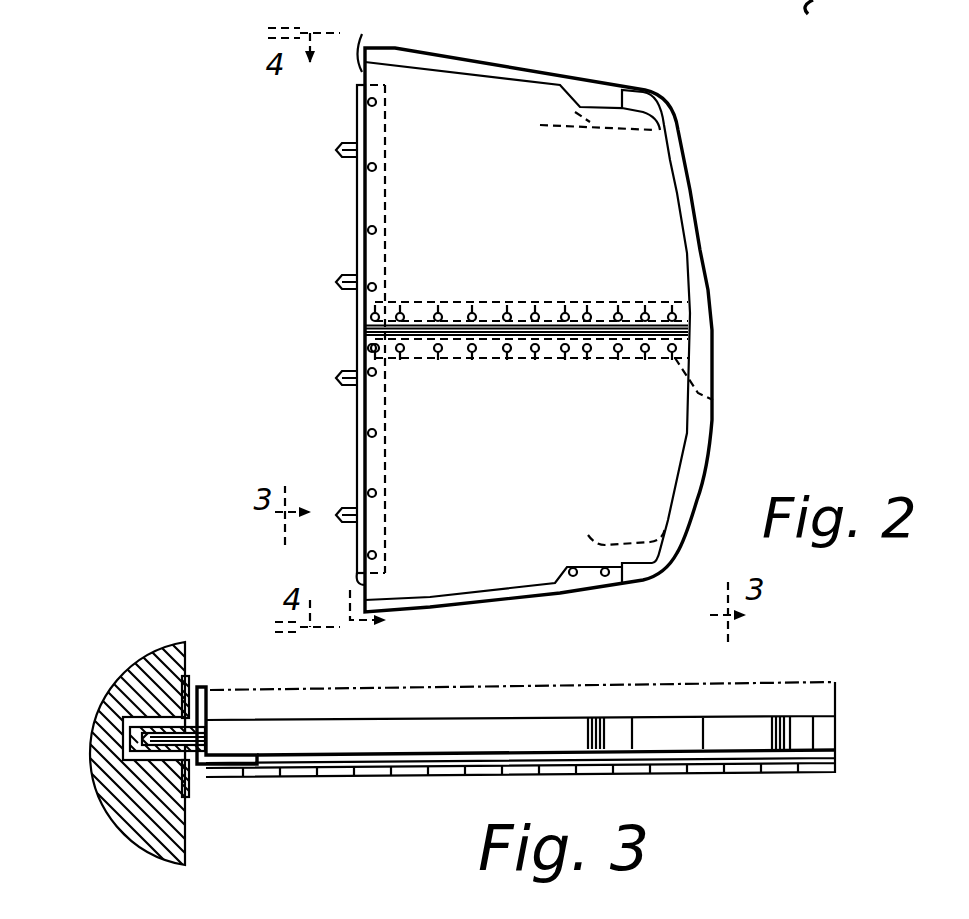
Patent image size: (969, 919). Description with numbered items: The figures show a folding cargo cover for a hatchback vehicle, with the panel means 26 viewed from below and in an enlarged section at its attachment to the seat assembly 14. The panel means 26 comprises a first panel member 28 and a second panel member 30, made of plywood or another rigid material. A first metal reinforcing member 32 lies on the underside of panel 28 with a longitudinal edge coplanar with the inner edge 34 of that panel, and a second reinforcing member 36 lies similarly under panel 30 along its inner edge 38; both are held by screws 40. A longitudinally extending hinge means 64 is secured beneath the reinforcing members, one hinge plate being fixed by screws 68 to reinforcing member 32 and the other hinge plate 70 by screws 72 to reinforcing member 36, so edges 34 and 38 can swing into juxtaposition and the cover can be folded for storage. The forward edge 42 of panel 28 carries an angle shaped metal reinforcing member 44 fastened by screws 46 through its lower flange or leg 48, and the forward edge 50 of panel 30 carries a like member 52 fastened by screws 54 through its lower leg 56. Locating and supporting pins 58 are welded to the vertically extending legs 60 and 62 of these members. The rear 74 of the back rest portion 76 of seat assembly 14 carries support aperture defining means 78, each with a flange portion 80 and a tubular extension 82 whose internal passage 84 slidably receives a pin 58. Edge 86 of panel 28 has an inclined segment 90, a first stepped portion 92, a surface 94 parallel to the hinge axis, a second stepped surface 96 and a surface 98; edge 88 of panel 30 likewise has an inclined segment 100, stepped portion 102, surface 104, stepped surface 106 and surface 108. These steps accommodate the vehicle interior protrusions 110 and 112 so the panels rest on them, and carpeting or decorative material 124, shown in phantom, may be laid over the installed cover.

In FIG. 3, the seat assembly 14 is at (93, 719).
In FIG. 2, the panel means 26 is at (688, 201).
In FIG. 3, the panel means 26 is at (560, 693).
In FIG. 2, the first panel member 28 is at (660, 154).
In FIG. 2, the second panel member 30 is at (660, 457).
In FIG. 3, the second panel member 30 is at (515, 718).
In FIG. 2, the first metal reinforcing member 32 is at (463, 303).
In FIG. 2, the inner edge of panel 28 34 is at (548, 325).
In FIG. 2, the second reinforcing member 36 is at (645, 352).
In FIG. 3, the second reinforcing member 36 is at (432, 752).
In FIG. 2, the inner edge of panel 30 38 is at (523, 333).
In FIG. 2, the screws 40 is at (473, 345).
In FIG. 2, the forward edge of panel 28 42 is at (362, 37).
In FIG. 2, the angle shaped metal reinforcing member 44 is at (356, 110).
In FIG. 2, the screws 46 is at (375, 165).
In FIG. 2, the lower disposed flange or leg 48 is at (387, 162).
In FIG. 2, the forward edge of panel 30 50 is at (364, 586).
In FIG. 2, the angle shaped metal reinforcing member 52 is at (356, 452).
In FIG. 3, the angle shaped metal reinforcing member 52 is at (200, 771).
In FIG. 2, the screws 54 is at (372, 433).
In FIG. 2, the lower disposed flange or leg 56 is at (385, 462).
In FIG. 3, the lower disposed flange or leg 56 is at (258, 755).
In FIG. 2, the locating and supporting pins 58 is at (340, 150).
In FIG. 3, the locating and supporting pins 58 is at (160, 742).
In FIG. 2, the vertically extending flange or leg 60 is at (357, 190).
In FIG. 2, the vertically extending flange or leg 62 is at (357, 482).
In FIG. 3, the vertically extending flange or leg 62 is at (200, 689).
In FIG. 2, the hinge means 64 is at (668, 284).
In FIG. 3, the hinge means 64 is at (714, 777).
In FIG. 2, the screws 68 is at (436, 313).
In FIG. 2, the hinge plate 70 is at (711, 389).
In FIG. 3, the hinge plate 70 is at (805, 773).
In FIG. 2, the screws 72 is at (371, 348).
In FIG. 3, the rear of back rest portion 74 is at (188, 662).
In FIG. 3, the back rest portion 76 is at (125, 689).
In FIG. 3, the support aperture defining means 78 is at (114, 755).
In FIG. 3, the flange portion 80 is at (172, 790).
In FIG. 3, the tubular extension 82 is at (152, 720).
In FIG. 3, the internal passage 84 is at (168, 727).
In FIG. 2, the edge of panel 28 86 is at (528, 82).
In FIG. 2, the edge of panel 30 88 is at (488, 601).
In FIG. 2, the first generally laterally inclined segment 90 is at (488, 72).
In FIG. 2, the first stepped portion 92 is at (580, 98).
In FIG. 2, the surface 94 is at (605, 98).
In FIG. 2, the second stepped surface 96 is at (630, 102).
In FIG. 2, the surface 98 is at (662, 122).
In FIG. 2, the first generally laterally inclined segment 100 is at (428, 608).
In FIG. 2, the first stepped portion 102 is at (570, 568).
In FIG. 3, the first stepped portion 102 is at (600, 737).
In FIG. 2, the surface 104 is at (605, 565).
In FIG. 3, the surface 104 is at (667, 737).
In FIG. 2, the second stepped surface 106 is at (628, 572).
In FIG. 3, the second stepped surface 106 is at (703, 718).
In FIG. 2, the surface 108 is at (672, 568).
In FIG. 3, the surface 108 is at (735, 739).
In FIG. 2, the contoured protrusion 110 is at (562, 90).
In FIG. 2, the contoured protrusion 112 is at (588, 535).
In FIG. 3, the carpeting or decorative material 124 is at (790, 683).